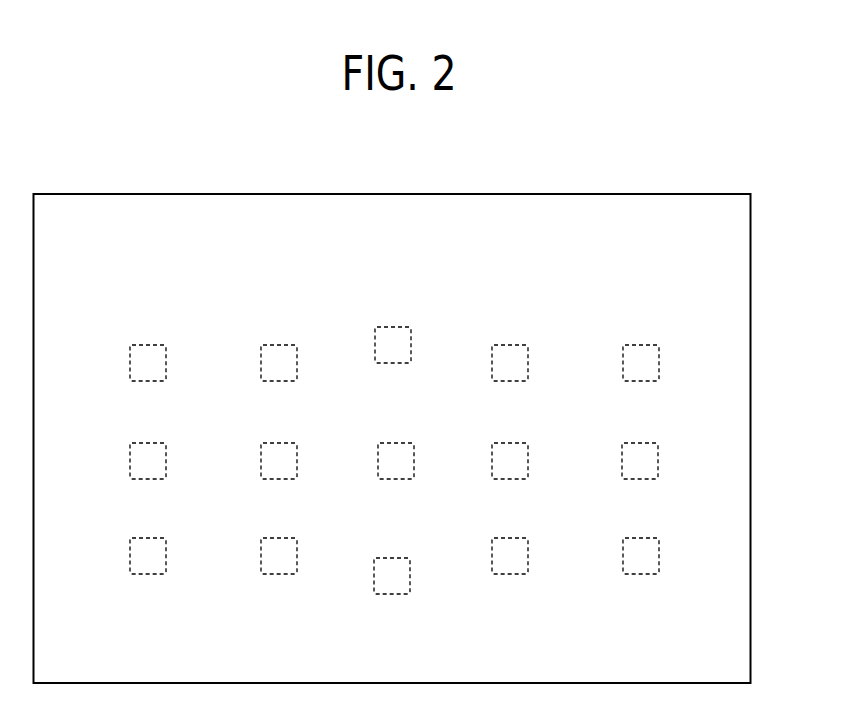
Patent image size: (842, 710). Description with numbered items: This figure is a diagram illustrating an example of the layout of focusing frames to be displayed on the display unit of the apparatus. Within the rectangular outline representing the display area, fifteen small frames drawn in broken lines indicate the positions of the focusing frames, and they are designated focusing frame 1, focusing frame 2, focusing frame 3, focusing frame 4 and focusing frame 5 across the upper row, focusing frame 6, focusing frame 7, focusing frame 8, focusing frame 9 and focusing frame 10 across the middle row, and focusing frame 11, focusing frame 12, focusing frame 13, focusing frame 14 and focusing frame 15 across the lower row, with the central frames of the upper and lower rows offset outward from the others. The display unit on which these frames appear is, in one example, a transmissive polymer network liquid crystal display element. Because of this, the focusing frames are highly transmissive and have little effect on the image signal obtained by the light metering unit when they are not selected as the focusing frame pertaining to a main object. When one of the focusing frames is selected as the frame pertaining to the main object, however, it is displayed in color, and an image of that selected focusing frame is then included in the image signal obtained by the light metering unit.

The focusing frame 1 is at (148, 343).
The focusing frame 2 is at (279, 343).
The focusing frame 3 is at (393, 325).
The focusing frame 4 is at (510, 343).
The focusing frame 5 is at (641, 343).
The focusing frame 6 is at (148, 440).
The focusing frame 7 is at (279, 440).
The focusing frame 8 is at (396, 440).
The focusing frame 9 is at (510, 440).
The focusing frame 10 is at (640, 440).
The focusing frame 11 is at (148, 535).
The focusing frame 12 is at (279, 535).
The focusing frame 13 is at (392, 555).
The focusing frame 14 is at (510, 535).
The focusing frame 15 is at (641, 535).